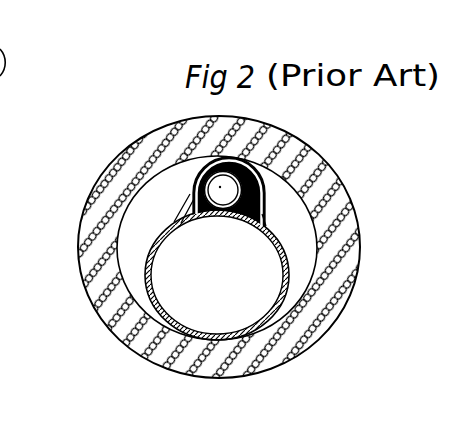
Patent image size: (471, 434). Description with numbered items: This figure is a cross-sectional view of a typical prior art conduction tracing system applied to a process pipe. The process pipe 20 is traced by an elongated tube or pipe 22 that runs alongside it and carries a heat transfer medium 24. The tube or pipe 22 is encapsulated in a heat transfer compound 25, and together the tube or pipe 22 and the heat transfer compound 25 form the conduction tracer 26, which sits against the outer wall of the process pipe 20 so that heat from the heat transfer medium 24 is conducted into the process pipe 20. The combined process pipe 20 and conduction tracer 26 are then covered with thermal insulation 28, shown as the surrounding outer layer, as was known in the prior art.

The process pipe 20 is at (155, 306).
The elongated tube or pipe 22 is at (200, 182).
The heat transfer medium 24 is at (203, 172).
The heat transfer compound 25 is at (258, 198).
The conduction tracer 26 is at (265, 210).
The thermal insulation 28 is at (160, 147).